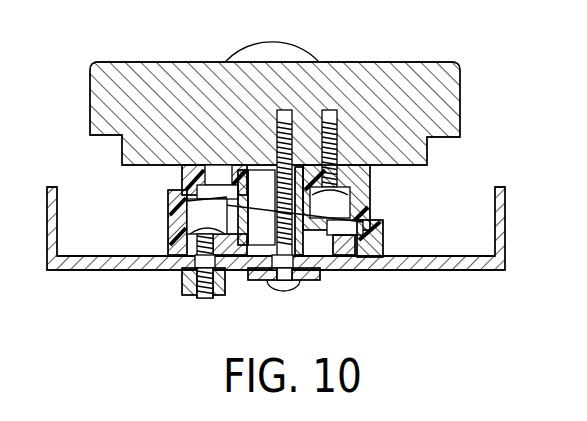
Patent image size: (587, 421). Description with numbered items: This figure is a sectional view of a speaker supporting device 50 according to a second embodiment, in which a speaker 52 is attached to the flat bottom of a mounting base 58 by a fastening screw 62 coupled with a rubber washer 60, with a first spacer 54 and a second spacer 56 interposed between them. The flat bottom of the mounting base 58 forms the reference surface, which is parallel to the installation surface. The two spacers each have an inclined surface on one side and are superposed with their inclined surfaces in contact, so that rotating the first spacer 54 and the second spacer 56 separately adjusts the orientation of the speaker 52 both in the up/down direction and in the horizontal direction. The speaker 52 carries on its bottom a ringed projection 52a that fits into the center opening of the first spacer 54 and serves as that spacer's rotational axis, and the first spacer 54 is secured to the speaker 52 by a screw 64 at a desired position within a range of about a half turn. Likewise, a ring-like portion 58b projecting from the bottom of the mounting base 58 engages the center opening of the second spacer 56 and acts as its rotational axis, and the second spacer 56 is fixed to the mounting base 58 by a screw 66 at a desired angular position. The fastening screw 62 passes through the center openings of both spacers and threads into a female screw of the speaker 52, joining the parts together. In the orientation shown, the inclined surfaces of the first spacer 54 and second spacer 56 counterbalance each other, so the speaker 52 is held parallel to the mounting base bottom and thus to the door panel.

The speaker supporting device 50 is at (459, 179).
The speaker 52 is at (332, 72).
The ringed projection 52a is at (253, 167).
The first spacer 54 is at (360, 186).
The second spacer 56 is at (375, 246).
The mounting base 58 is at (435, 268).
The ring-like portion 58b is at (243, 270).
The rubber washer 60 is at (315, 283).
The fastening screw 62 is at (278, 287).
The screw 64 is at (333, 195).
The screw 66 is at (207, 297).